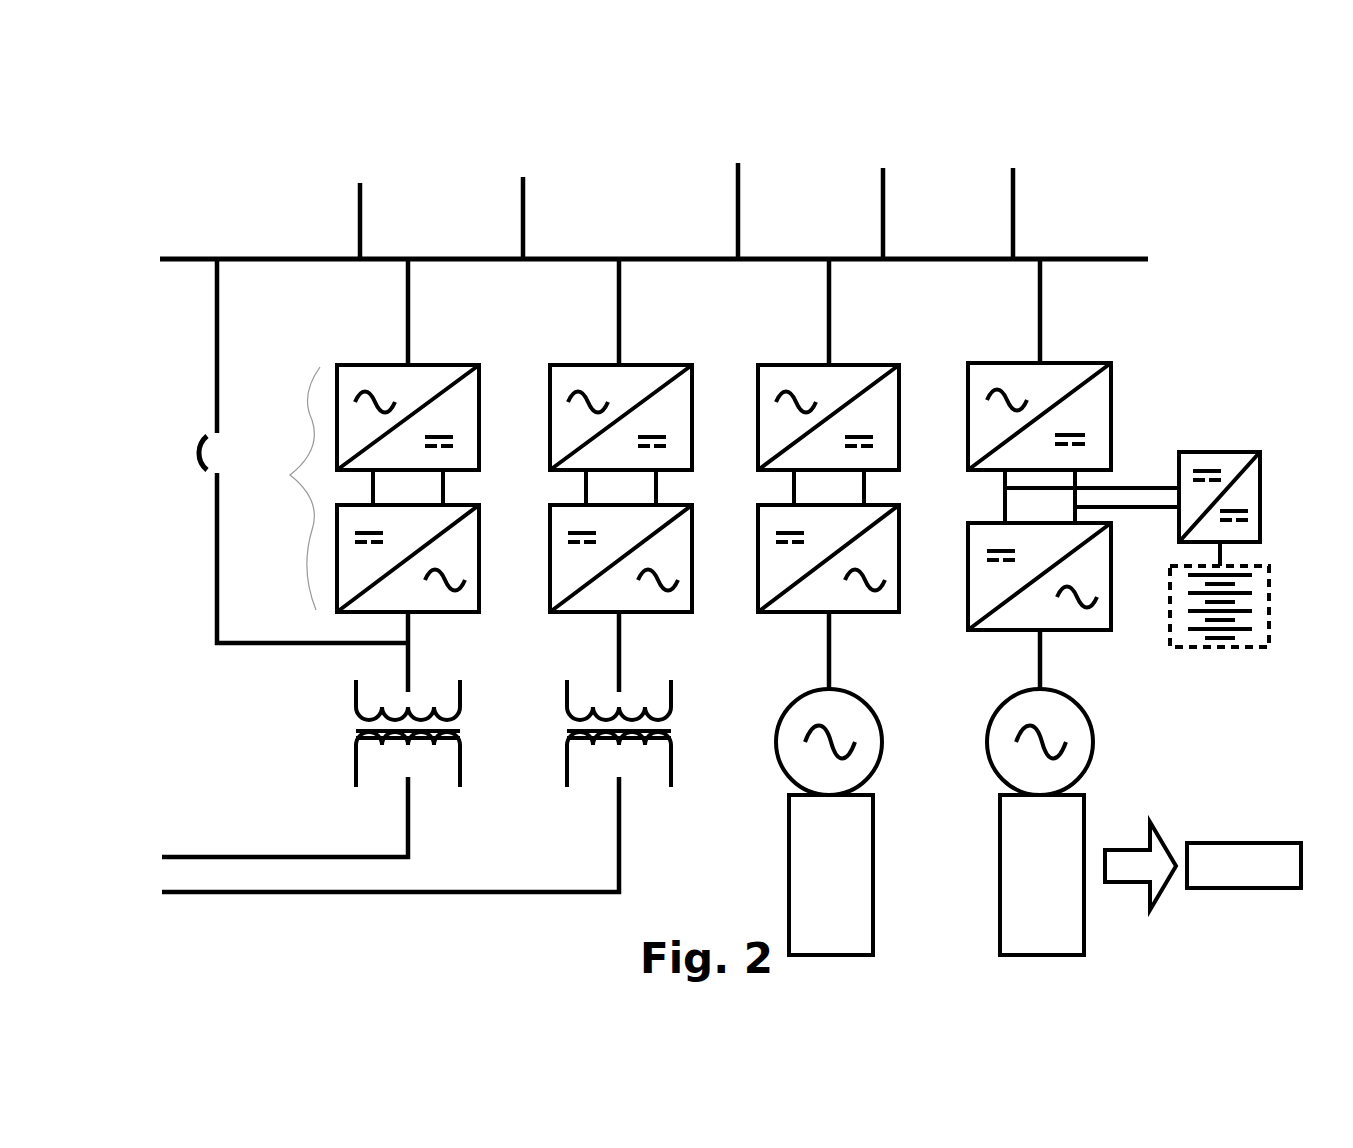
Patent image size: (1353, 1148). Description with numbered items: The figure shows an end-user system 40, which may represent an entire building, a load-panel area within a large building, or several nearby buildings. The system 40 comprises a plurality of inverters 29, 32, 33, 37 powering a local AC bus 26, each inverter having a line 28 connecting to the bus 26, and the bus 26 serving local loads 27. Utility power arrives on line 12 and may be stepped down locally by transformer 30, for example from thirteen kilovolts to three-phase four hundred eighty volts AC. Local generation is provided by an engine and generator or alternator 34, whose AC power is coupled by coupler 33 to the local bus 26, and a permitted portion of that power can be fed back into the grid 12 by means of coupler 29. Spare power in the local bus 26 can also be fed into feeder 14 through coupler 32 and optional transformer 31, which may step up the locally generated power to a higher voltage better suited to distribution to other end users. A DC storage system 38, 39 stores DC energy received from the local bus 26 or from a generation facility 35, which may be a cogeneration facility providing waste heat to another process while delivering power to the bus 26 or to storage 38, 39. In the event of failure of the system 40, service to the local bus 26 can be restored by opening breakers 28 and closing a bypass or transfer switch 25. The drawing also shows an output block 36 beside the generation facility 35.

The end-user system 40 is at (195, 132).
The local AC bus 26 is at (592, 248).
The local loads 27 is at (355, 224).
The line 28 is at (424, 313).
The bypass or transfer switch 25 is at (172, 456).
The inverter 29 is at (369, 528).
The inverter 32 is at (587, 352).
The inverter 33 is at (787, 352).
The inverter 37 is at (962, 368).
The DC storage system 38 is at (1232, 445).
The DC storage system 39 is at (1280, 609).
The transformer 30 is at (475, 740).
The optional transformer 31 is at (685, 765).
The line 12 is at (281, 848).
The feeder 14 is at (320, 903).
The engine and generator or alternator 34 is at (885, 948).
The generation facility 35 is at (1085, 960).
The output/load 36 is at (1256, 835).